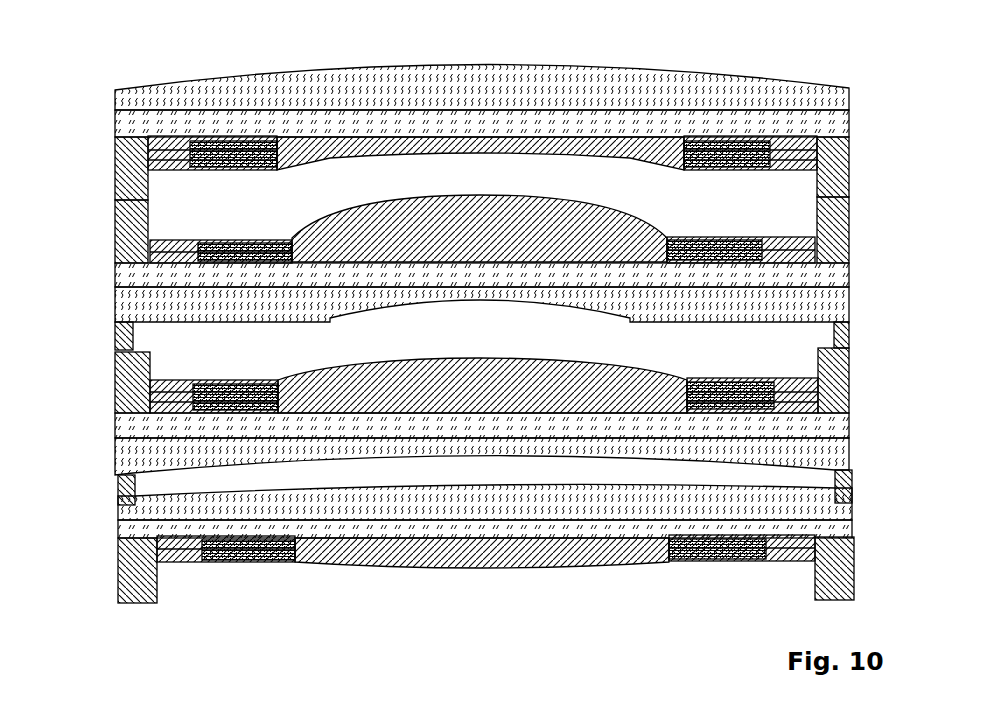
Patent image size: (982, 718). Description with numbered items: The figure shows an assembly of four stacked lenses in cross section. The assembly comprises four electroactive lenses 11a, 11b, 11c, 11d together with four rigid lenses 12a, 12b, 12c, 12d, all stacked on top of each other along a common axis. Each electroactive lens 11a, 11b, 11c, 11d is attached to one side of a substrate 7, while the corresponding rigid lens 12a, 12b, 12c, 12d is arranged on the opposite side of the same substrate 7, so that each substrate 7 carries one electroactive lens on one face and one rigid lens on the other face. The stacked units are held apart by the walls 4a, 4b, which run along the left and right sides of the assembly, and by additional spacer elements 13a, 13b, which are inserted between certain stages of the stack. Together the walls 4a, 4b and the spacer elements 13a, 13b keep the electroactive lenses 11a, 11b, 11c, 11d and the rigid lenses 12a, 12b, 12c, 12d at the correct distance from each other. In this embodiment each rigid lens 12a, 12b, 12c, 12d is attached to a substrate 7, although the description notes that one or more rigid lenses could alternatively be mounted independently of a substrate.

The rigid lens 12a is at (283, 80).
The rigid lens 12b is at (132, 307).
The rigid lens 12c is at (132, 450).
The rigid lens 12d is at (148, 508).
The substrate 7 is at (131, 125).
The wall 4a is at (128, 166).
The wall 4b is at (829, 185).
The electroactive lens 11a is at (98, 177).
The electroactive lens 11b is at (95, 244).
The electroactive lens 11c is at (95, 403).
The electroactive lens 11d is at (92, 562).
The spacer element 13a is at (123, 337).
The spacer element 13b is at (118, 490).